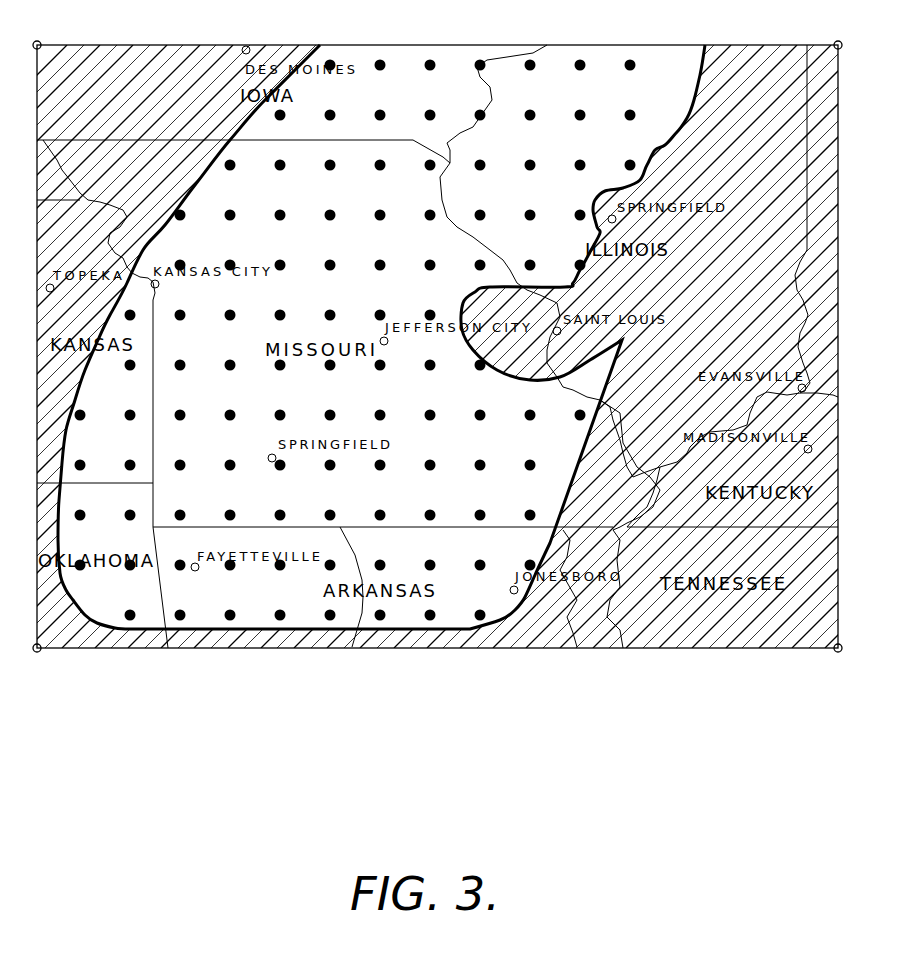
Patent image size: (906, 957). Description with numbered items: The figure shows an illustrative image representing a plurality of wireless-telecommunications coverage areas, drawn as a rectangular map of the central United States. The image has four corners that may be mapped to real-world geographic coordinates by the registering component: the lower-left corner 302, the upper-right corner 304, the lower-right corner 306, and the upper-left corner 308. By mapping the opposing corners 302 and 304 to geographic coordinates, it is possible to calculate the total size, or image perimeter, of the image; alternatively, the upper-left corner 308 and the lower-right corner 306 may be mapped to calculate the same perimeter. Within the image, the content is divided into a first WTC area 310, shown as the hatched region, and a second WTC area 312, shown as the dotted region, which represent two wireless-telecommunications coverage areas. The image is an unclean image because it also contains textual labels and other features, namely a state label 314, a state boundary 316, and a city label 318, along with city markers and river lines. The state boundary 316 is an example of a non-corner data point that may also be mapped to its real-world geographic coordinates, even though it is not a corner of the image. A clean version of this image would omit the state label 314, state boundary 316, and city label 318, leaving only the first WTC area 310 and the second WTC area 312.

The lower-left corner 302 is at (37, 649).
The upper-right corner 304 is at (838, 44).
The lower-right corner 306 is at (838, 649).
The upper-left corner 308 is at (37, 44).
The first WTC area 310 is at (453, 346).
The second WTC area 312 is at (355, 340).
The state label 314 is at (352, 647).
The state boundary 316 is at (465, 527).
The city label 318 is at (577, 647).